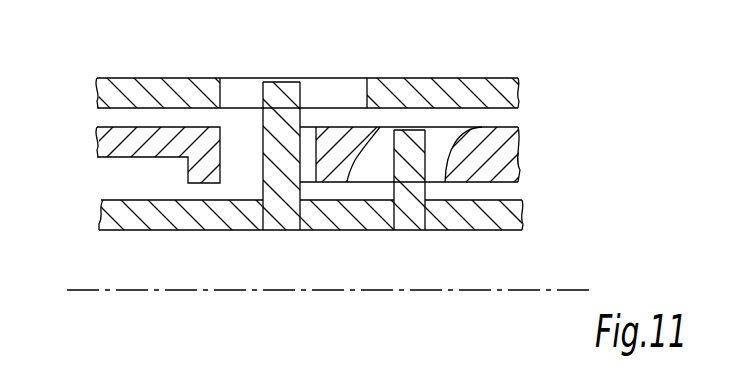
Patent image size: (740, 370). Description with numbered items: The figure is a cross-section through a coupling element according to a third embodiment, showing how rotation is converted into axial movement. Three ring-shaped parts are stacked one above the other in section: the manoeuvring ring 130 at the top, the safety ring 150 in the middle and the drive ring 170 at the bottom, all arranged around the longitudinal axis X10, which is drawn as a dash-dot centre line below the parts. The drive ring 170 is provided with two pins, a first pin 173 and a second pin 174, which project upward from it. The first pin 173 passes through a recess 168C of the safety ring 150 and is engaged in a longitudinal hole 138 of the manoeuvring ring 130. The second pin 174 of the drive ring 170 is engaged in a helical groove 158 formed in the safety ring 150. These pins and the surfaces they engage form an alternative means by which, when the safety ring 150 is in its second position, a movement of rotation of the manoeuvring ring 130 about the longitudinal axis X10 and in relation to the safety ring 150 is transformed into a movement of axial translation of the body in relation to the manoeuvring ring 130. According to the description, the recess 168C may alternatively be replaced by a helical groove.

The manoeuvring ring 130 is at (503, 87).
The longitudinal hole 138 is at (323, 87).
The safety ring 150 is at (503, 162).
The helical groove 158 is at (440, 141).
The recess 168C is at (235, 163).
The drive ring 170 is at (503, 223).
The first pin 173 is at (277, 170).
The second pin 174 is at (412, 183).
The longitudinal axis X10 is at (133, 290).